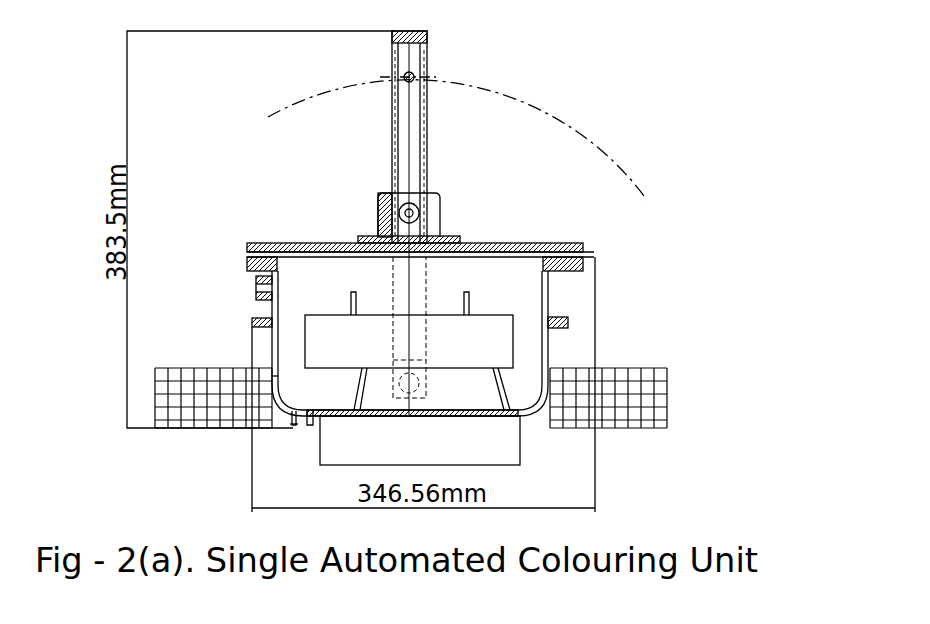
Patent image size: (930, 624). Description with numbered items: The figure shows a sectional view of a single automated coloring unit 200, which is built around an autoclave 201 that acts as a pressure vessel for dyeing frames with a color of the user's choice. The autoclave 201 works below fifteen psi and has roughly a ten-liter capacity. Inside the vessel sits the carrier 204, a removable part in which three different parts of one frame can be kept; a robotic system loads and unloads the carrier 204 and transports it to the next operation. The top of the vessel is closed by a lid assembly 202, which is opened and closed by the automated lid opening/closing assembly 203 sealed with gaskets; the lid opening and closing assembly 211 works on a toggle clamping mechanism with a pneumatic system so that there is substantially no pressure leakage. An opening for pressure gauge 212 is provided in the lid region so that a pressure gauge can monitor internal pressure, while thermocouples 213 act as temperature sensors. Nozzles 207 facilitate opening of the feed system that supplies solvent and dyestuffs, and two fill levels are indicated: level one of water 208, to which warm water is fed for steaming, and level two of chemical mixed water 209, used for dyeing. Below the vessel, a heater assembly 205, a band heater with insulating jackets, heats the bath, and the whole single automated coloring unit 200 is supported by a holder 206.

The single automated coloring unit 200 is at (668, 135).
The autoclave 201 is at (552, 350).
The lid assembly 202 is at (590, 246).
The automated lid opening/closing assembly 203 is at (427, 48).
The carrier 204 is at (518, 314).
The heater assembly 205 is at (523, 442).
The holder 206 is at (613, 392).
The nozzles 207 is at (258, 278).
The level one of water 208 is at (270, 369).
The level two of chemical mixed water 209 is at (265, 298).
The lid opening and closing assembly 211 is at (537, 240).
The opening for pressure gauge 212 is at (282, 243).
The thermocouples 213 is at (270, 380).